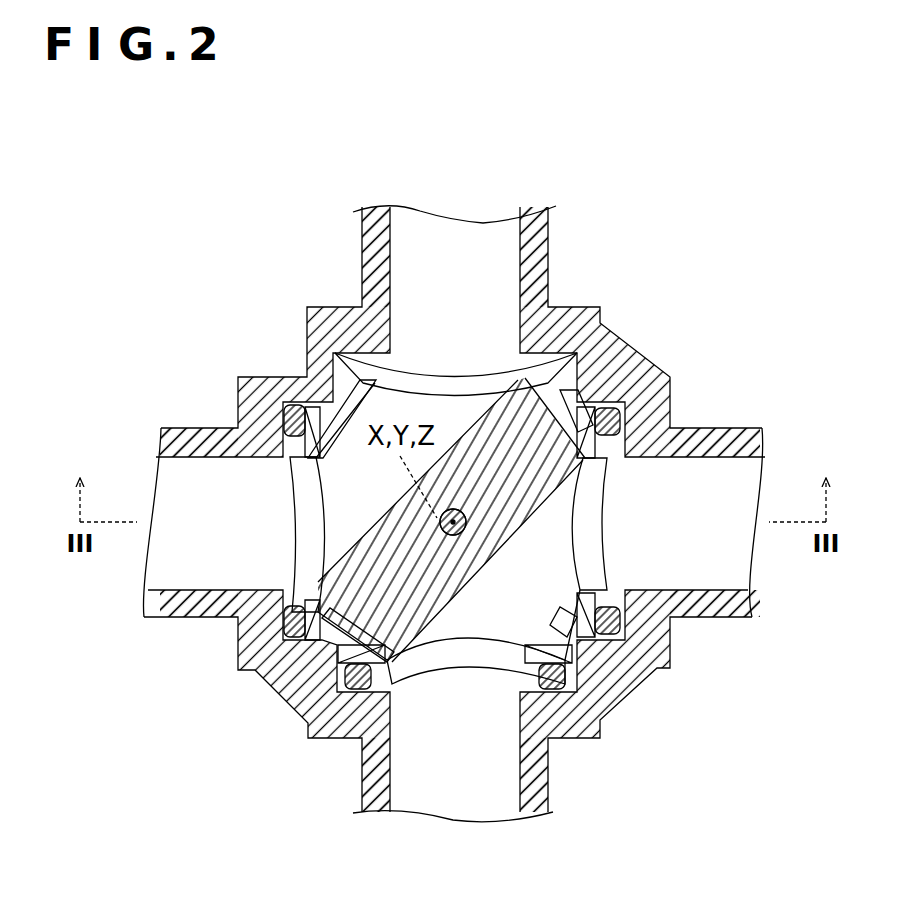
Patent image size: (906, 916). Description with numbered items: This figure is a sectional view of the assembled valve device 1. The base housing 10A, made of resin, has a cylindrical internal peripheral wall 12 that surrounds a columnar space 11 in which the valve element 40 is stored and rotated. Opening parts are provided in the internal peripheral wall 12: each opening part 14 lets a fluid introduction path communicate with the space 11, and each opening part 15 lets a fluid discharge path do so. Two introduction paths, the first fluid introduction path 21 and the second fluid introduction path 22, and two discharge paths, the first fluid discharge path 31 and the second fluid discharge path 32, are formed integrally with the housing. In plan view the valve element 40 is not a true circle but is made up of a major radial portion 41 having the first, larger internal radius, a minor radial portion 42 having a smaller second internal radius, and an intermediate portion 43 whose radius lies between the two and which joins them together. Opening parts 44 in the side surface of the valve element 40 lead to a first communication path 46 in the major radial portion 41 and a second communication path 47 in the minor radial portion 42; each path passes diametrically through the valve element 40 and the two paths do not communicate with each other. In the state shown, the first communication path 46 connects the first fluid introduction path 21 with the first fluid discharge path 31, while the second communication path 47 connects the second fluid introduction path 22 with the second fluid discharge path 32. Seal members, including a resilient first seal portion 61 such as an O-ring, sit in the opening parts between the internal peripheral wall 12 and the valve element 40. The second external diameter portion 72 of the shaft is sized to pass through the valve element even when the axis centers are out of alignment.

The valve device 1 is at (751, 198).
The base housing 10A is at (676, 644).
The columnar space 11 is at (560, 374).
The internal peripheral wall 12 is at (350, 652).
The opening part 14 is at (294, 530).
The opening part 15 is at (427, 352).
The first fluid introduction path 21 is at (173, 565).
The second fluid introduction path 22 is at (735, 560).
The first fluid discharge path 31 is at (460, 240).
The second fluid discharge path 32 is at (467, 798).
The valve element 40 is at (358, 388).
The major radial portion 41 is at (345, 368).
The minor radial portion 42 is at (588, 463).
The intermediate portion 43 is at (566, 412).
The opening parts 44 is at (477, 380).
The first communication path 46 is at (287, 474).
The second communication path 47 is at (502, 620).
The first seal portion 61 is at (622, 422).
The second external diameter portion 72 is at (463, 531).